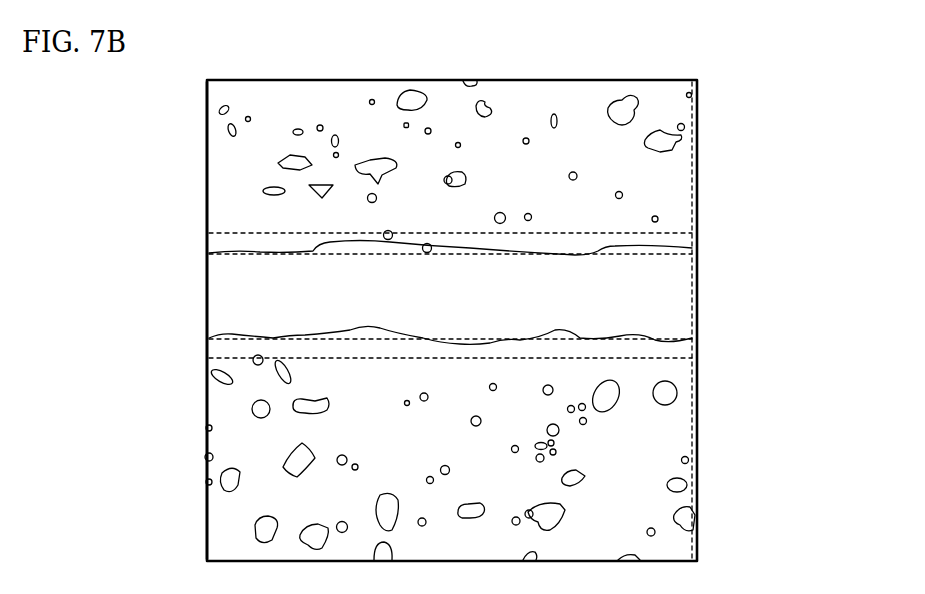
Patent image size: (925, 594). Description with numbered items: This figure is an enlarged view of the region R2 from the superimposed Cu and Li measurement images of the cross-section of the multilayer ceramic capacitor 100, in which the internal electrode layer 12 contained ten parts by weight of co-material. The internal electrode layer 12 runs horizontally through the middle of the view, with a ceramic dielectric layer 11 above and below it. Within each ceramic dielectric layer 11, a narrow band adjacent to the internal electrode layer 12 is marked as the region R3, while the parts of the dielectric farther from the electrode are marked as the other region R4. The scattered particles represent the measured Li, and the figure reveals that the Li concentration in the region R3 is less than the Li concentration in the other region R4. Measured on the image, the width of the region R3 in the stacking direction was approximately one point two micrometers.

The multilayer ceramic capacitor 100 is at (608, 68).
The ceramic dielectric layer 11 is at (683, 187).
The internal electrode layer 12 is at (670, 300).
The region R2 is at (698, 127).
The region near the internal electrode layer R3 is at (205, 242).
The other region R4 is at (205, 148).
The lithium Li is at (680, 137).